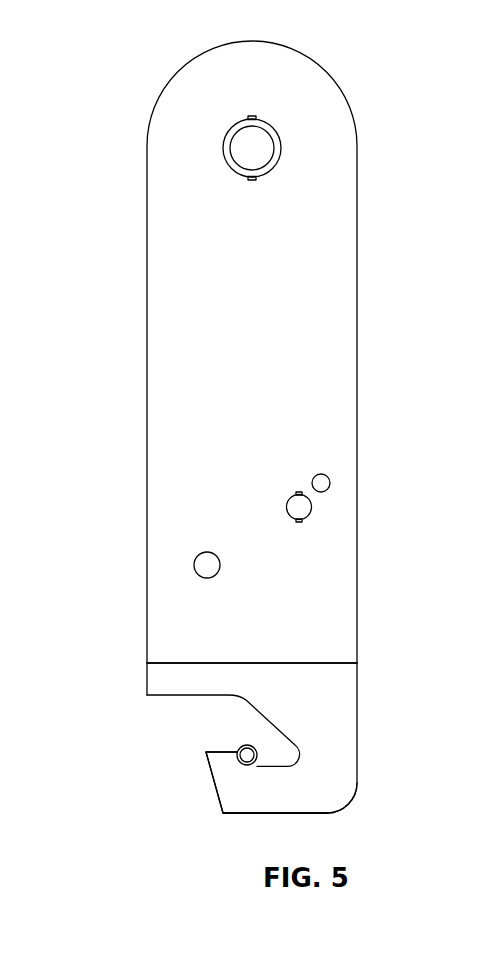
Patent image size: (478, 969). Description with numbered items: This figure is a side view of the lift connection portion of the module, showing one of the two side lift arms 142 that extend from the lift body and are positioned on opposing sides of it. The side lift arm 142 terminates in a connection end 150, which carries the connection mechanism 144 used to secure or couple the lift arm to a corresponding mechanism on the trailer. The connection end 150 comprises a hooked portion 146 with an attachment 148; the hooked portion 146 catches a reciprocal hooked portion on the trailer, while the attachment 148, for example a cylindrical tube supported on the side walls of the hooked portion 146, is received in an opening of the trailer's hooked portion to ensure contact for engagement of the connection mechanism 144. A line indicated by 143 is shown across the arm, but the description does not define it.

The side lift arm 142 is at (161, 285).
The bend line 143 is at (359, 646).
The connection mechanism 144 is at (214, 814).
The hooked portion 146 is at (222, 740).
The attachment 148 is at (251, 751).
The connection end 150 is at (307, 813).